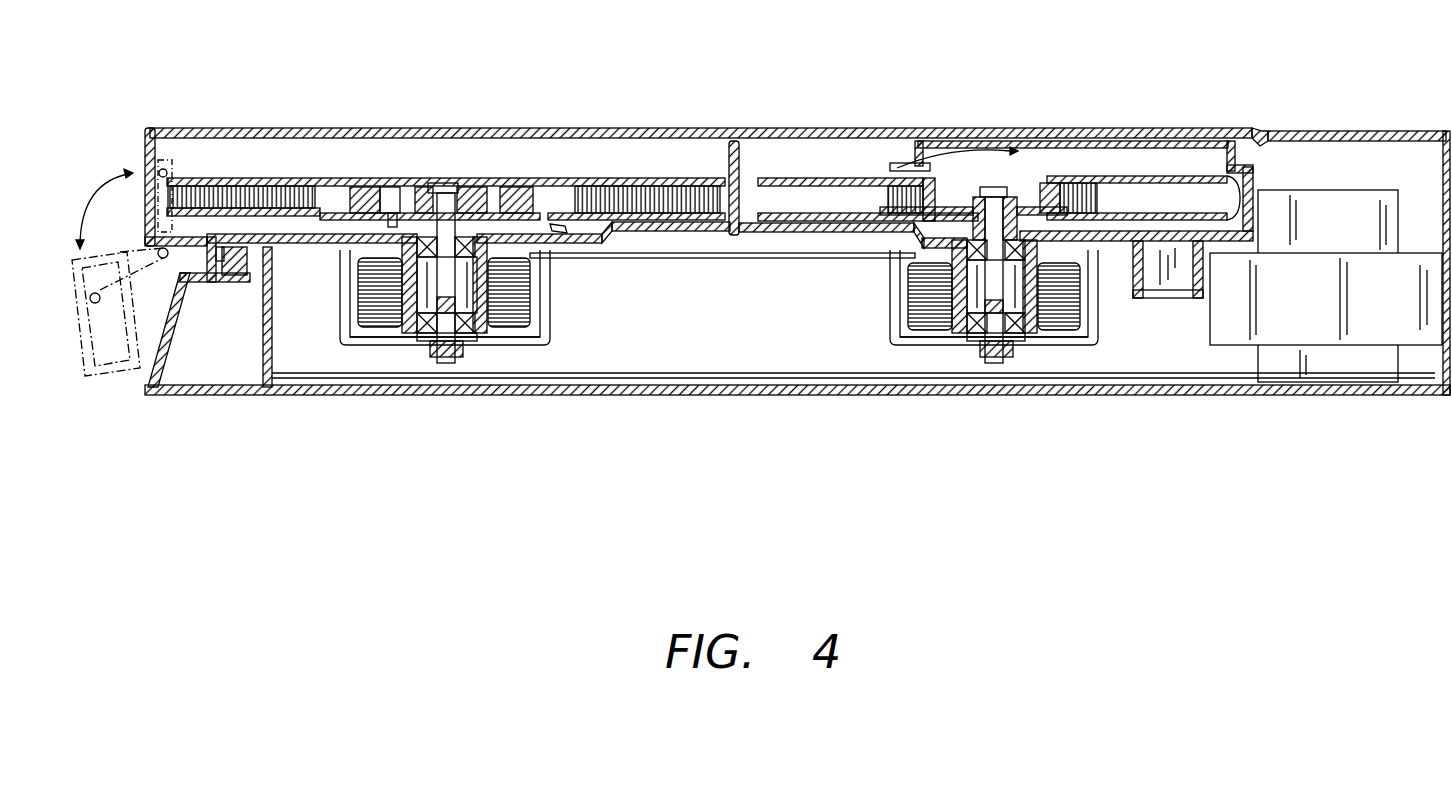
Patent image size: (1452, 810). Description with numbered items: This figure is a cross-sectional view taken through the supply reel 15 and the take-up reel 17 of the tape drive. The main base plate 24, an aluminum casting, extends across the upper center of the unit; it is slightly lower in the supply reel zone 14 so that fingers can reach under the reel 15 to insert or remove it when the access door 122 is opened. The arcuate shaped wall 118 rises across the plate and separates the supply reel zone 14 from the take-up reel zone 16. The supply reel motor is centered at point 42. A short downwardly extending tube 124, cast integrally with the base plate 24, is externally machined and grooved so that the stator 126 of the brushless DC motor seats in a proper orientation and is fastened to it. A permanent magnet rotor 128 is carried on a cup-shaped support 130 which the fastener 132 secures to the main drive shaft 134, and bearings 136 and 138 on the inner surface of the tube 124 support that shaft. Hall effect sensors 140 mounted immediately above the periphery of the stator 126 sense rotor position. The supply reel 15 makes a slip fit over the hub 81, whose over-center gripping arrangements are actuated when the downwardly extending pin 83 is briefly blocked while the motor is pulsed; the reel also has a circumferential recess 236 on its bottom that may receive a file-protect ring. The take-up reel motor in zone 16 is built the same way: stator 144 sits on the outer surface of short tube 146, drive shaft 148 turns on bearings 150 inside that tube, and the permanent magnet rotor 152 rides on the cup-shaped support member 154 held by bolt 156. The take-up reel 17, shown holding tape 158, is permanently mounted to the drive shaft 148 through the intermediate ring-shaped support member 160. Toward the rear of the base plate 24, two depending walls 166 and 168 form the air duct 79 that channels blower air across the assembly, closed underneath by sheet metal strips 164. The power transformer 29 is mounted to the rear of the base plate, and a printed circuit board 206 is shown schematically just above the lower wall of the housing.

The supply reel zone 14 is at (292, 217).
The supply reel 15 is at (285, 175).
The take-up reel zone 16 is at (797, 156).
The take-up reel 17 is at (833, 202).
The main base plate 24 is at (773, 240).
The power transformer 29 is at (1362, 265).
The supply reel motor center 42 is at (445, 182).
The air duct 79 is at (1182, 280).
The hub 81 is at (507, 180).
The downwardly extending pin 83 is at (335, 205).
The arcuate shaped wall 118 is at (735, 140).
The access door 122 is at (72, 265).
The downwardly extending tube 124 is at (483, 315).
The stator 126 is at (385, 307).
The permanent magnet rotor 128 is at (548, 292).
The cup-shaped support 130 is at (548, 330).
The fastener 132 is at (447, 335).
The main drive shaft 134 is at (473, 180).
The bearing 136 is at (423, 320).
The bearing 138 is at (513, 180).
The Hall effect sensors 140 is at (533, 257).
The stator 144 is at (1063, 307).
The downwardly extending short tube 146 is at (1027, 320).
The drive shaft 148 is at (993, 290).
The bearings 150 is at (1023, 233).
The permanent magnet rotor 152 is at (897, 340).
The cup-shaped support member 154 is at (1097, 345).
The bolt 156 is at (992, 345).
The tape 158 is at (1120, 197).
The intermediate ring-shaped support member 160 is at (930, 190).
The sheet metal strips 164 is at (1200, 300).
The depending wall 166 is at (1140, 280).
The depending wall 168 is at (1200, 272).
The printed circuit board 206 is at (870, 372).
The circumferential recess 236 is at (277, 385).